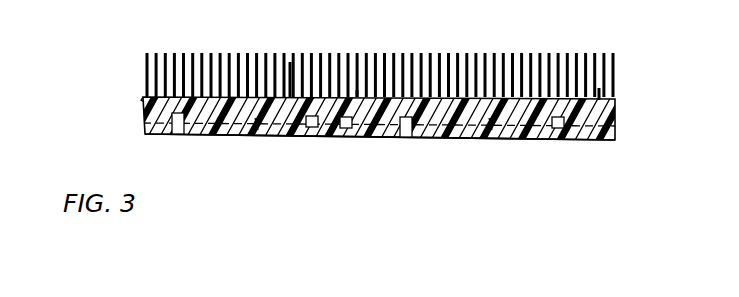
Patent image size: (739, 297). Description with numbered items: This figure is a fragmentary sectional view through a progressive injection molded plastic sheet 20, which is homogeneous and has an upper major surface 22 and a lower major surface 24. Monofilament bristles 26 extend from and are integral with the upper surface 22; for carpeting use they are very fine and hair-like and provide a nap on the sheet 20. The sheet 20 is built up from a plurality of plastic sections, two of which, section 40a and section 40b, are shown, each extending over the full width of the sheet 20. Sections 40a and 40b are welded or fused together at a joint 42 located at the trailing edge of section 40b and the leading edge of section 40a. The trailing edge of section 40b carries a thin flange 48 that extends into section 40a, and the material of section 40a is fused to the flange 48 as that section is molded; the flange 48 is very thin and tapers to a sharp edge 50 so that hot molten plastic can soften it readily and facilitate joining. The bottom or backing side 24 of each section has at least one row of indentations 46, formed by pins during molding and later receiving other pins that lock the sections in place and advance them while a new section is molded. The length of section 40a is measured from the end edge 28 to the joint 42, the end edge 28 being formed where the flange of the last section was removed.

The progressive injection molded plastic sheet 20 is at (207, 47).
The upper major surface 22 is at (599, 98).
The lower major surface 24 is at (160, 137).
The monofilament bristles 26 is at (288, 54).
The end edge 28 is at (143, 107).
The plastic section 40a is at (257, 128).
The plastic section 40b is at (490, 120).
The joint 42 is at (350, 125).
The indentations 46 is at (180, 135).
The flange 48 is at (342, 130).
The sharp edge 50 is at (309, 128).